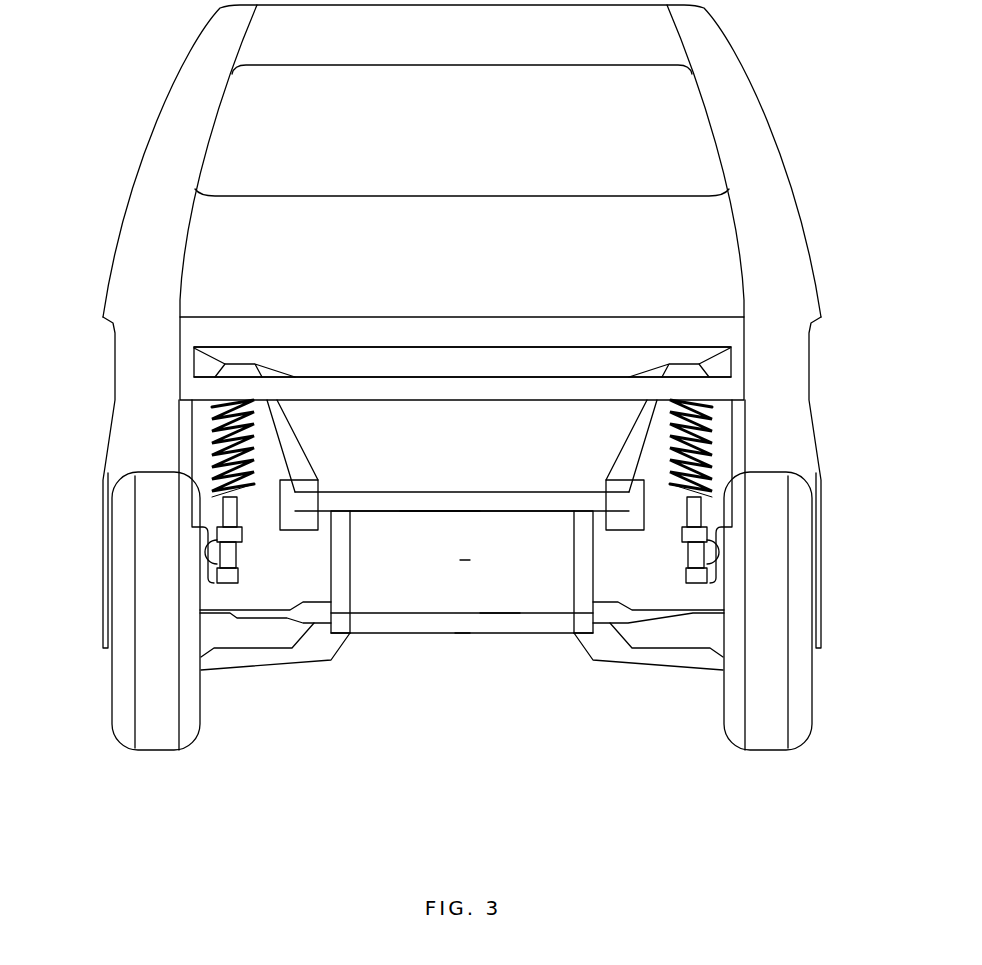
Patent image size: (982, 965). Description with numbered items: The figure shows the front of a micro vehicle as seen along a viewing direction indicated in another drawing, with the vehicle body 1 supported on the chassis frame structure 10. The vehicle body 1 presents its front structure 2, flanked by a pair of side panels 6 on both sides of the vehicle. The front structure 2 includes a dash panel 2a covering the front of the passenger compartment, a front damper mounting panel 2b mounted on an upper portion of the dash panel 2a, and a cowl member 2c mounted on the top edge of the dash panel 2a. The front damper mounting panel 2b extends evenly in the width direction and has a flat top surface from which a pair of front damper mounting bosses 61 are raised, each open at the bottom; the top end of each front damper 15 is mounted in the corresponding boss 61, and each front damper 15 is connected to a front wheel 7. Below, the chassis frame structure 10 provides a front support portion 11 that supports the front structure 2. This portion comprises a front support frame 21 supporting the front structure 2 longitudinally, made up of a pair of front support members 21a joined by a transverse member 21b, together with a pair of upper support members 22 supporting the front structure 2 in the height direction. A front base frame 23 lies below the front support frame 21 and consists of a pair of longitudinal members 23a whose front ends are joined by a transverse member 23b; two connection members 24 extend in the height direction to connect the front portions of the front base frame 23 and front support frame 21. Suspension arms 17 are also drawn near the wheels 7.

The vehicle body 1 is at (790, 122).
The front structure 2 is at (517, 293).
The dash panel 2a is at (495, 578).
The front damper mounting panel 2b is at (433, 388).
The cowl member 2c is at (368, 327).
The side panels 6 is at (147, 228).
The front wheel 7 is at (153, 752).
The chassis frame structure 10 is at (460, 745).
The front support portion 11 is at (501, 672).
The front damper 15 is at (200, 437).
The suspension arm 17 is at (265, 656).
The front support frame 21 is at (467, 470).
The front support members 21a is at (302, 503).
The transverse member 21b is at (418, 502).
The upper support members 22 is at (283, 440).
The front base frame 23 is at (433, 652).
The longitudinal members 23a is at (340, 625).
The transverse member 23b is at (463, 627).
The connection members 24 is at (340, 558).
The front damper mounting bosses 61 is at (240, 372).